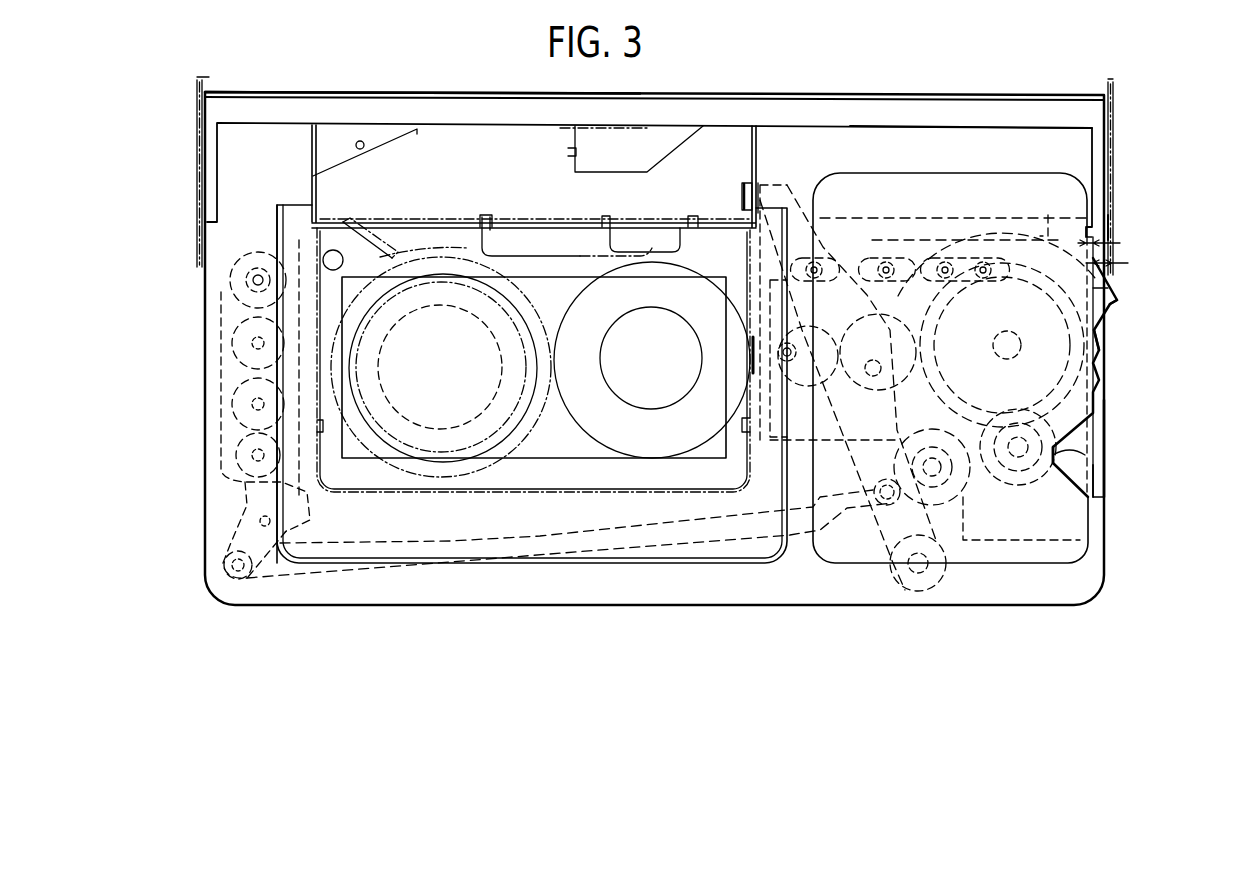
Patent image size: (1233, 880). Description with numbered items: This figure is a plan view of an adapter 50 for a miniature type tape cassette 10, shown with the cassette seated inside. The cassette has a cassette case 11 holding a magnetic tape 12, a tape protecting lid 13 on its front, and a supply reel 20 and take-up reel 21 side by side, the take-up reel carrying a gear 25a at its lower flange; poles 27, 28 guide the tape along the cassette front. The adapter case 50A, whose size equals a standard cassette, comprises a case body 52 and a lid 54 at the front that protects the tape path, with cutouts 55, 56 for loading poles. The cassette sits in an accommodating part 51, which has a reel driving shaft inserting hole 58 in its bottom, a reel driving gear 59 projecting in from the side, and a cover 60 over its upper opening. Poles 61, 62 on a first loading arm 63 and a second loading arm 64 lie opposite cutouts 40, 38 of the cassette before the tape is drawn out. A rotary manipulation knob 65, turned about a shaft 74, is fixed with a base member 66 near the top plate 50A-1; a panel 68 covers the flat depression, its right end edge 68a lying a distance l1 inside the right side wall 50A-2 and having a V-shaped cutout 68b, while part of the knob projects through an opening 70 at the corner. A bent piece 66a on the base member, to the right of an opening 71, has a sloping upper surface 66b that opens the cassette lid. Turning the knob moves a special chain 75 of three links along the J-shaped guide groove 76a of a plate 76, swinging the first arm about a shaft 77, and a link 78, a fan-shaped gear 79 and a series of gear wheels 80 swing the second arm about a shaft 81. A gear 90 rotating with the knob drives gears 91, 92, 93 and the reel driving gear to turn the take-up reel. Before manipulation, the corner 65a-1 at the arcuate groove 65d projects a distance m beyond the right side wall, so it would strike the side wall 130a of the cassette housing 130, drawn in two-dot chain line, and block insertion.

The miniature type tape cassette 10 is at (427, 494).
The cassette case 11 is at (356, 488).
The magnetic tape 12 is at (480, 216).
The tape protecting lid 13 is at (460, 125).
The supply reel 20 is at (512, 440).
The take-up reel 21 is at (580, 418).
The gear 25a is at (747, 327).
The pole 27 is at (348, 224).
The pole 28 is at (712, 330).
The cutout 38 is at (442, 250).
The cutout 40 is at (650, 247).
The adapter 50 is at (862, 64).
The adapter case 50A is at (207, 372).
The top plate 50A-1 is at (998, 128).
The right side wall 50A-2 is at (1098, 420).
The accommodating part 51 is at (518, 494).
The case body 52 is at (207, 447).
The lid 54 is at (298, 96).
The cutout 55 is at (364, 147).
The cutout 56 is at (568, 152).
The reel driving shaft inserting hole 58 is at (496, 362).
The reel driving gear 59 is at (748, 383).
The cover 60 is at (514, 228).
The pole 61 is at (630, 232).
The pole 62 is at (408, 232).
The first loading arm 63 is at (876, 520).
The second loading arm 64 is at (372, 238).
The rotary manipulation knob 65 is at (1110, 387).
The corner 65a-1 is at (1110, 307).
The arcuate groove 65d is at (1098, 340).
The base member 66 is at (975, 222).
The bent piece 66a is at (740, 205).
The upper surface 66b is at (757, 186).
The panel 68 is at (890, 175).
The right end edge 68a is at (1108, 288).
The V-shaped cutout 68b is at (1085, 455).
The opening 70 is at (1098, 487).
The opening 71 is at (725, 140).
The shaft 74 is at (996, 334).
The special chain 75 is at (860, 253).
The plate 76 is at (915, 238).
The J-shaped guide groove 76a is at (1063, 336).
The shaft 77 is at (940, 576).
The link 78 is at (665, 548).
The fan-shaped gear 79 is at (245, 516).
The series of gear wheels 80 is at (218, 404).
The shaft 81 is at (248, 282).
The gear 90 is at (1047, 215).
The gear 91 is at (1100, 515).
The gear 92 is at (940, 518).
The gear 93 is at (852, 492).
The cassette housing 130 is at (1118, 126).
The side wall 130a is at (1117, 228).
The distance l1 is at (1100, 243).
The distance m is at (1122, 263).